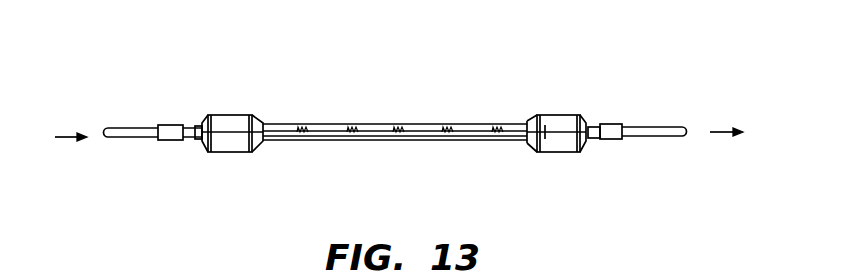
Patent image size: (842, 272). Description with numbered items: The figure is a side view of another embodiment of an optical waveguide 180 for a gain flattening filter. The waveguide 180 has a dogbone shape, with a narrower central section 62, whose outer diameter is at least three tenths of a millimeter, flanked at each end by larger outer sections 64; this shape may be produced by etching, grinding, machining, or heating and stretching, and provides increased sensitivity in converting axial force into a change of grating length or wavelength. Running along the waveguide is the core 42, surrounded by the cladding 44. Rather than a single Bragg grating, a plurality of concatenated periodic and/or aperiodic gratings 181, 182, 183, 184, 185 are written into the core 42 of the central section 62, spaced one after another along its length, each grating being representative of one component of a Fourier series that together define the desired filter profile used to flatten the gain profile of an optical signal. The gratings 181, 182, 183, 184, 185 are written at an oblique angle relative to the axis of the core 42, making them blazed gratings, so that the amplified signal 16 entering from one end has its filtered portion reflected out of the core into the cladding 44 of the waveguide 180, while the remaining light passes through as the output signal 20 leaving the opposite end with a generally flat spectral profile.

The amplified signal 16 is at (62, 139).
The output signal 20 is at (715, 134).
The core 42 is at (543, 127).
The cladding 44 is at (560, 147).
The central section 62 is at (372, 122).
The larger outer sections 64 is at (237, 114).
The waveguide 180 is at (490, 72).
The first concatenated grating 181 is at (300, 141).
The second concatenated grating 182 is at (348, 141).
The third concatenated grating 183 is at (400, 141).
The fourth concatenated grating 184 is at (450, 141).
The fifth concatenated grating 185 is at (497, 141).